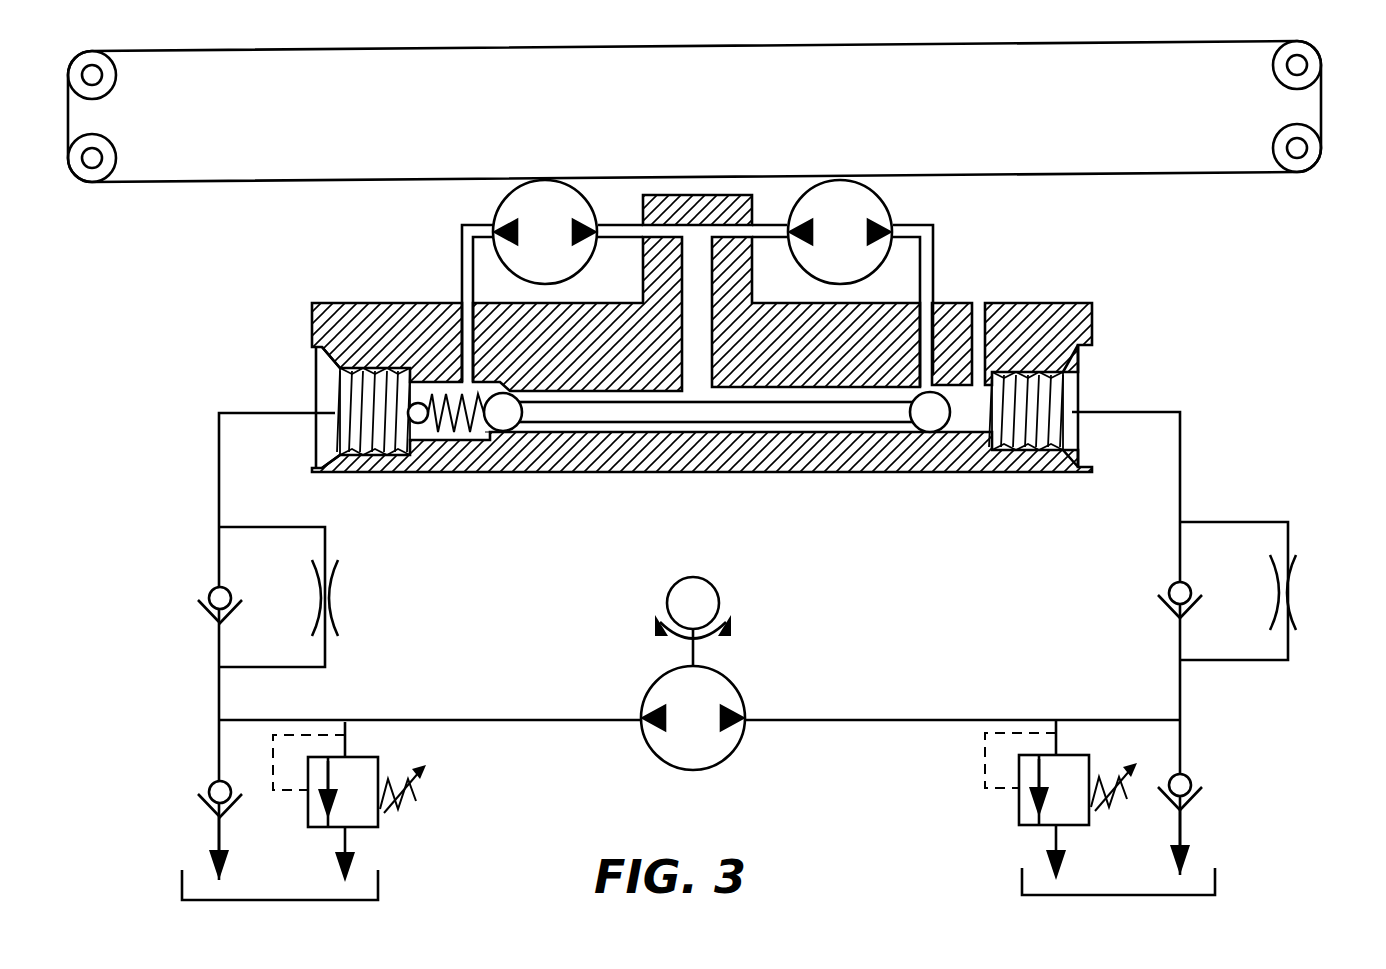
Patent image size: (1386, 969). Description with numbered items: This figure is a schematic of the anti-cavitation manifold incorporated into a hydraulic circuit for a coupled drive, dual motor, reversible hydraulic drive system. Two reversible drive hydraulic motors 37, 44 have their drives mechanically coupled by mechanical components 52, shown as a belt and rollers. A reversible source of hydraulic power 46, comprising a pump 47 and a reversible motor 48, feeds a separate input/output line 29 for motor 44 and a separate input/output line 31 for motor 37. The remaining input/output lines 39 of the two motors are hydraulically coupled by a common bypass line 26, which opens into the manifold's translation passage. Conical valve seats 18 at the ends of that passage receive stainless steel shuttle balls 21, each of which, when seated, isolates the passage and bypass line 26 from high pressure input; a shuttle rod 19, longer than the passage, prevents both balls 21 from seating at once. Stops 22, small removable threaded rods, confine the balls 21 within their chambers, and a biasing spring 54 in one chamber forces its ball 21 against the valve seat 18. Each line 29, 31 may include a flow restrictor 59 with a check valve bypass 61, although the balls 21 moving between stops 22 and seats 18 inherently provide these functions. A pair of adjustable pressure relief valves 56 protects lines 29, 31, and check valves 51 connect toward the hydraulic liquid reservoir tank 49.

The mechanical components 52 is at (722, 46).
The input/output lines 39 is at (632, 224).
The reversible drive hydraulic motor 44 is at (545, 232).
The reversible drive hydraulic motor 37 is at (840, 232).
The input/output line 29 is at (460, 268).
The input/output line 31 is at (935, 254).
The common bypass line 26 is at (720, 240).
The stops 22 is at (392, 456).
The biasing spring 54 is at (452, 437).
The shuttle balls 21 is at (514, 429).
The conical valve seats 18 is at (492, 436).
The shuttle rod 19 is at (671, 414).
The check valve bypass 61 is at (208, 594).
The flow restrictor 59 is at (340, 588).
The reversible motor 48 is at (721, 600).
The reversible source of hydraulic power 46 is at (745, 668).
The pump 47 is at (655, 760).
The check valves 51 is at (207, 786).
The adjustable pressure relief valves 56 is at (316, 830).
The hydraulic liquid reservoir tank 49 is at (380, 876).